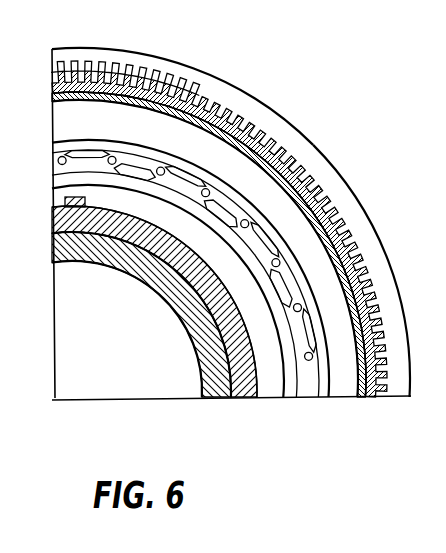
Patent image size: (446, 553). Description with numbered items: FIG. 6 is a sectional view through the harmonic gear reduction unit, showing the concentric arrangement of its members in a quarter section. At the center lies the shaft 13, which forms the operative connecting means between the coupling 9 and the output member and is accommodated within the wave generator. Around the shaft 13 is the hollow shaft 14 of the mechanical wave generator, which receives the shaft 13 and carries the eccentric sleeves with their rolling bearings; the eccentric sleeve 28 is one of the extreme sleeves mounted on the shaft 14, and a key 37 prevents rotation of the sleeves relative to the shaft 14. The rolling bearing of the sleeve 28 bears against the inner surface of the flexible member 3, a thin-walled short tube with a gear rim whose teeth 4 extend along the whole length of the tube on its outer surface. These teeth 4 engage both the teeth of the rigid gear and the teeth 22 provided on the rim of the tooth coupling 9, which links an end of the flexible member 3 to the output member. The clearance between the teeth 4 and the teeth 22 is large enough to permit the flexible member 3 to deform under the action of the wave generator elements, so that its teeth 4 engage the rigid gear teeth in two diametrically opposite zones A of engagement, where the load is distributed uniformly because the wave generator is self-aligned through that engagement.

The flexible member 3 is at (112, 83).
The teeth of the flexible member 4 is at (158, 80).
The coupling 9 is at (266, 117).
The shaft 13 is at (116, 262).
The shaft of the wave generator 14 is at (205, 293).
The teeth of the coupling 22 is at (303, 157).
The eccentric sleeve 28 is at (276, 389).
The key 37 is at (64, 203).
The zone of engagement A is at (397, 299).